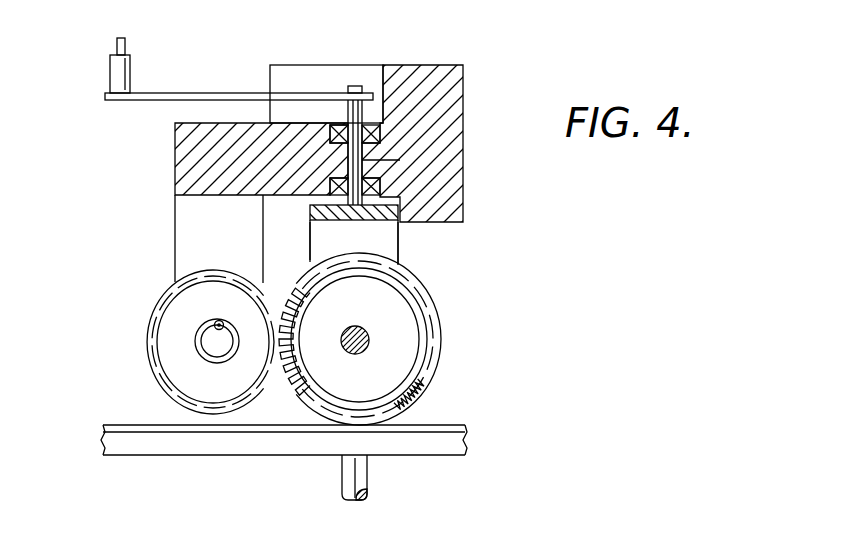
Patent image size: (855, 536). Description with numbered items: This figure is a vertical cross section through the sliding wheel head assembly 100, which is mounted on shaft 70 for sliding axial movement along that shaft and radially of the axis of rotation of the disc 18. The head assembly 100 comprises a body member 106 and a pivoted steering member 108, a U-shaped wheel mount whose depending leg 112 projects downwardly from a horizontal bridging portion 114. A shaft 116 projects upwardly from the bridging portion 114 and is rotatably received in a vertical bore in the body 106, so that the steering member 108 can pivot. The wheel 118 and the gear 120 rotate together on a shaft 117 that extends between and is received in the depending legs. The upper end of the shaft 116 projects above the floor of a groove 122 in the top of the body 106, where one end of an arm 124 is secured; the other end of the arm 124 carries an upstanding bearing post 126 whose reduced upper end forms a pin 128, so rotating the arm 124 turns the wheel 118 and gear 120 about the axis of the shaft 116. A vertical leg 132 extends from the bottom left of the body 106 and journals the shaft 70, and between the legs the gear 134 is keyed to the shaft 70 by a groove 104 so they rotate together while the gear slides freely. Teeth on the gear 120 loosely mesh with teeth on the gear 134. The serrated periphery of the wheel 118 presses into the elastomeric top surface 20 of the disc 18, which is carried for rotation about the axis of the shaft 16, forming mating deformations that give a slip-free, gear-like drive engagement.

The sliding wheel head assembly 100 is at (470, 85).
The body member 106 is at (408, 67).
The pivoted steering member 108 is at (404, 243).
The depending leg 112 is at (312, 242).
The horizontal bridging portion 114 is at (348, 220).
The shaft 116 is at (362, 162).
The shaft 117 is at (352, 327).
The wheel 118 is at (441, 345).
The gear 120 is at (416, 318).
The groove 122 is at (290, 73).
The arm 124 is at (192, 91).
The bearing post 126 is at (110, 78).
The pin 128 is at (115, 44).
The vertical leg 132 is at (185, 239).
The gear 134 is at (150, 378).
The shaft 70 is at (217, 350).
The groove 104 is at (231, 304).
The top surface 20 is at (452, 425).
The disc 18 is at (439, 448).
The shaft 16 is at (345, 481).